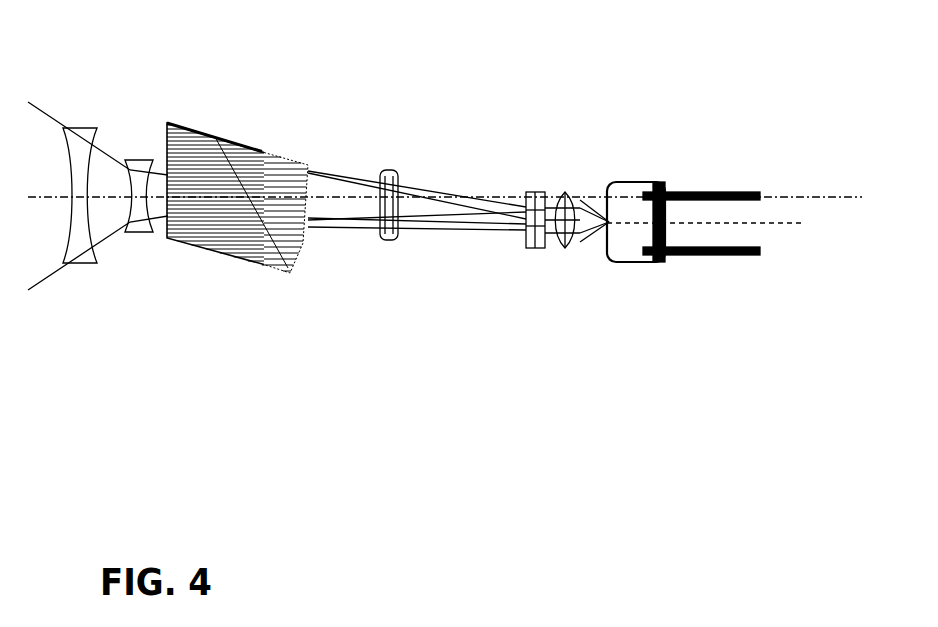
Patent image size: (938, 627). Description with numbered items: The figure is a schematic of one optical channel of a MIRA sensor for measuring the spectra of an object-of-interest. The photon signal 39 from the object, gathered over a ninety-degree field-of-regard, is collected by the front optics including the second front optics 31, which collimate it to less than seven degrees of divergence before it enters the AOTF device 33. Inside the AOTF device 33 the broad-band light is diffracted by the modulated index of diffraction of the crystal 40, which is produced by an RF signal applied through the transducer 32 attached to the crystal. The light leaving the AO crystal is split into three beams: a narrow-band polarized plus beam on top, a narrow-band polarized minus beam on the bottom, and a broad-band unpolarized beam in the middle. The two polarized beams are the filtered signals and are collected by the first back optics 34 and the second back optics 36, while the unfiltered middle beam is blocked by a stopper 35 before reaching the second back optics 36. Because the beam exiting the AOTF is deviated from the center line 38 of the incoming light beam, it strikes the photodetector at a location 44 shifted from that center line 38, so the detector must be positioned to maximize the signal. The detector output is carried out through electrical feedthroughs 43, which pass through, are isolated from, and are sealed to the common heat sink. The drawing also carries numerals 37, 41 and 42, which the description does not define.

The second front optics 31 is at (119, 122).
The transducer 32 is at (214, 139).
The AOTF device 33 is at (277, 143).
The first back optics 34 is at (374, 126).
The stopper 35 is at (494, 130).
The second back optics 36 is at (561, 130).
The housing 37 is at (637, 137).
The center line of the incoming light beam 38 is at (725, 106).
The photon signal 39 is at (98, 253).
The crystal 40 is at (243, 270).
The light beam 41 is at (417, 287).
The focal point 42 is at (611, 302).
The electrical feedthroughs 43 is at (701, 325).
The location on the PD 44 is at (706, 313).